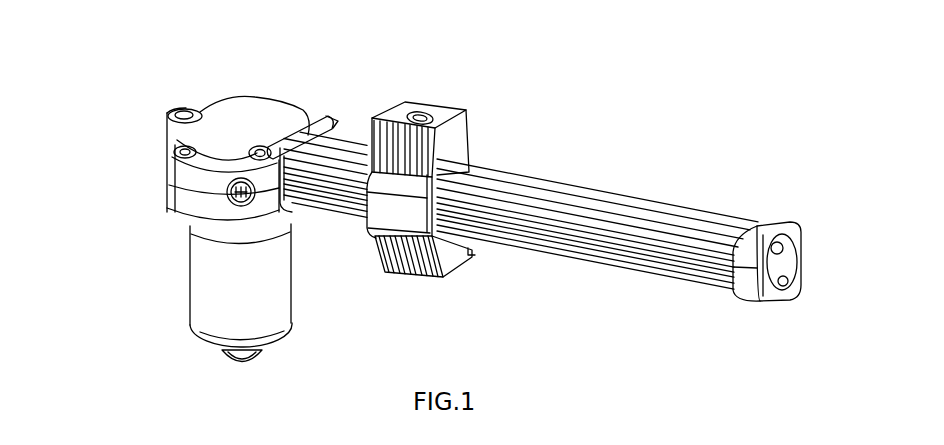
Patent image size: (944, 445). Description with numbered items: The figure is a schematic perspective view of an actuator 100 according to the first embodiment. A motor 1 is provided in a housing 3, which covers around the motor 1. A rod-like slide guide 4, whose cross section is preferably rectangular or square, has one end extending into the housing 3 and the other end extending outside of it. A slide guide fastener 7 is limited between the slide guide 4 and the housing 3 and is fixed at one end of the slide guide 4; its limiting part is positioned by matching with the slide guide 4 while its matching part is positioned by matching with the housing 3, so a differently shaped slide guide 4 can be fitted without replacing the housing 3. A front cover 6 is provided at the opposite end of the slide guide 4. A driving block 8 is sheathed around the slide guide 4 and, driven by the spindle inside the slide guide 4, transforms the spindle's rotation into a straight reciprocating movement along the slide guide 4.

The actuator 100 is at (176, 44).
The motor 1 is at (223, 299).
The housing 3 is at (172, 194).
The slide guide 4 is at (603, 260).
The front cover 6 is at (770, 225).
The slide guide fastener 7 is at (303, 112).
The driving block 8 is at (465, 110).